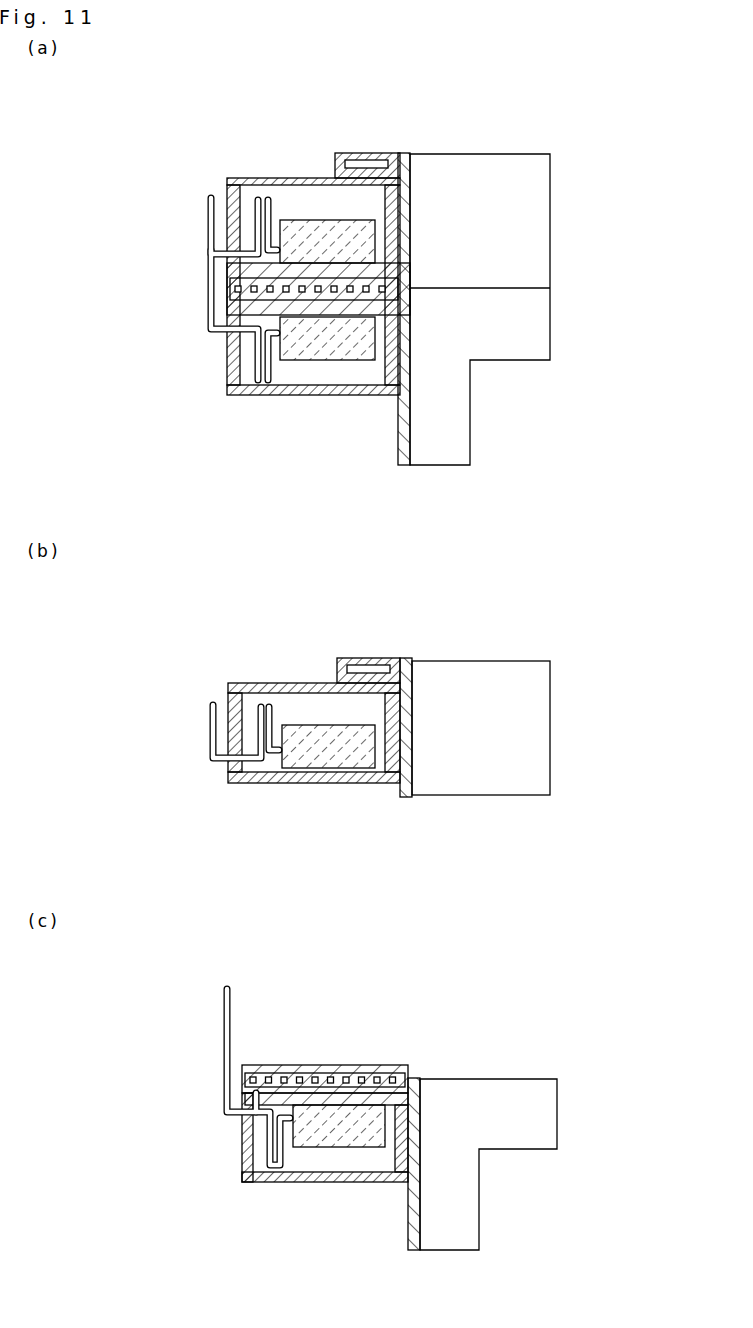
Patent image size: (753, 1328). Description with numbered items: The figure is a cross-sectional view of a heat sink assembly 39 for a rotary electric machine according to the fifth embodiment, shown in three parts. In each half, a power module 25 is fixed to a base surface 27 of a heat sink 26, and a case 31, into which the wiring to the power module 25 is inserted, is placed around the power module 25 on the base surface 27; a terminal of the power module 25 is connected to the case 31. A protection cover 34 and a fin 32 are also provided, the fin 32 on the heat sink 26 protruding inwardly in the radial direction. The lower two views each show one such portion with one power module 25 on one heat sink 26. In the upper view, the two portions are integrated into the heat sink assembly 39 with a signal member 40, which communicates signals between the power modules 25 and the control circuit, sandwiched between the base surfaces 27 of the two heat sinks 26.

The power module 25 is at (330, 236).
The heat sink 26 is at (490, 152).
The base surface 27 is at (253, 262).
The case 31 is at (228, 190).
The fin 32 is at (522, 207).
The protection cover 34 is at (293, 178).
The heat sink assembly 39 is at (407, 146).
The signal member 40 is at (240, 288).